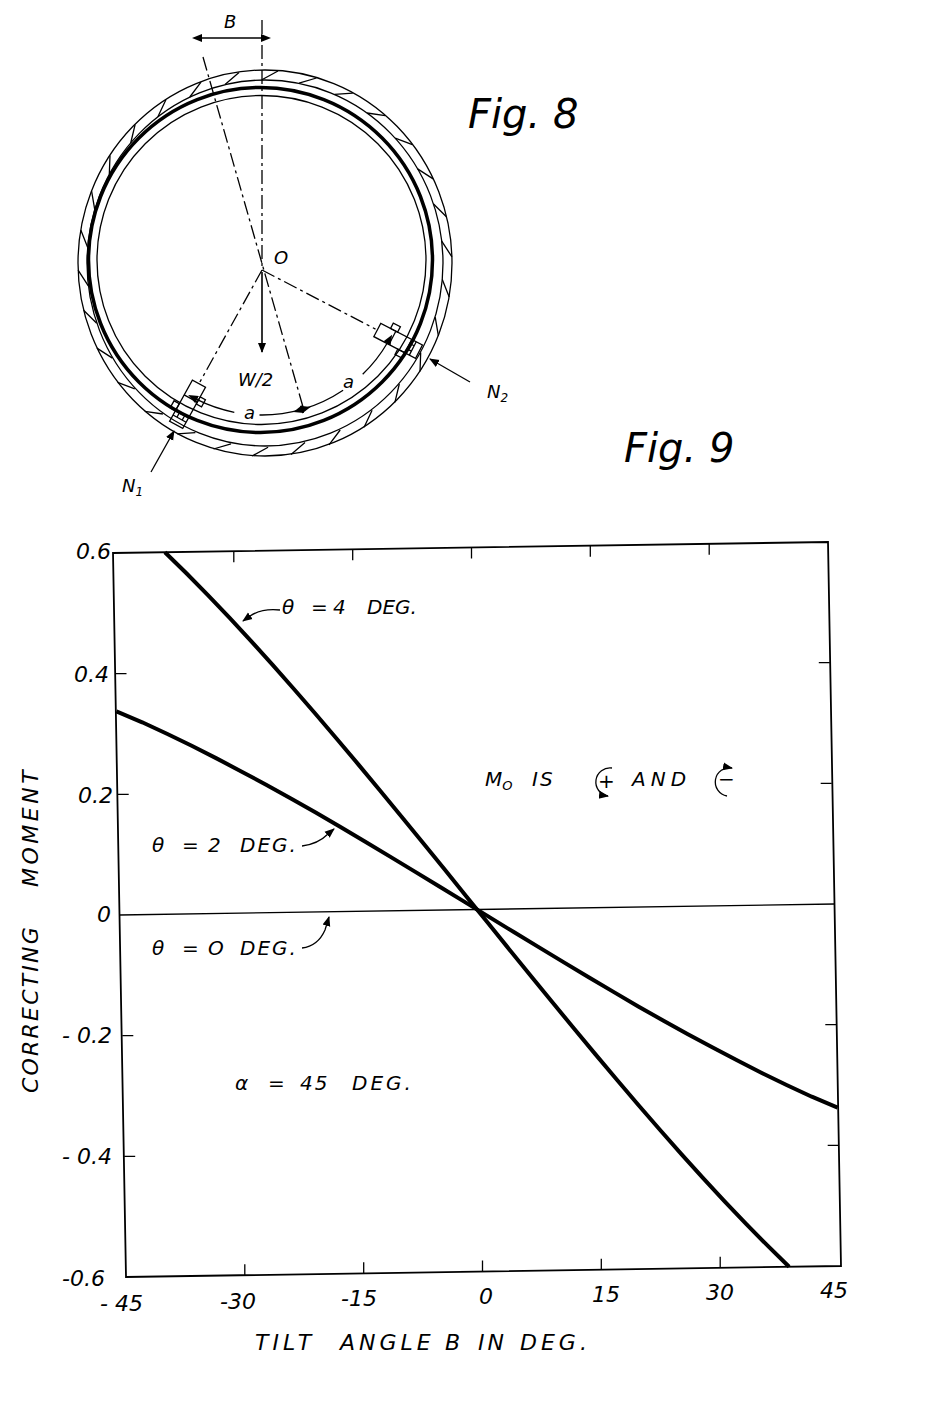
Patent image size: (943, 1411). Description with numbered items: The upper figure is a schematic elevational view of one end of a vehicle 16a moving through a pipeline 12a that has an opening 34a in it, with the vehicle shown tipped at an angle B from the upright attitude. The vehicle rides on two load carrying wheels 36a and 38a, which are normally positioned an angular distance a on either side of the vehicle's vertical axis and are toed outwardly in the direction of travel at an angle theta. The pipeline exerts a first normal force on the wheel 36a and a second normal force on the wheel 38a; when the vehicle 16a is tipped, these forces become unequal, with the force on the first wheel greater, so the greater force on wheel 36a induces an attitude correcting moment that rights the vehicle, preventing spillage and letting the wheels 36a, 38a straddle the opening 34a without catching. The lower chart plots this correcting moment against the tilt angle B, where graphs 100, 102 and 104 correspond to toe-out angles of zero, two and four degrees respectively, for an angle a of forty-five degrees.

In FIG. 8, the pipeline 12a is at (454, 243).
In FIG. 8, the vehicle 16a is at (413, 215).
In FIG. 8, the opening 34a is at (290, 451).
In FIG. 8, the load carrying wheel 36a is at (193, 383).
In FIG. 8, the load carrying wheel 38a is at (396, 322).
In FIG. 9, the graph 100 is at (393, 916).
In FIG. 9, the graph 102 is at (206, 745).
In FIG. 9, the graph 104 is at (344, 745).